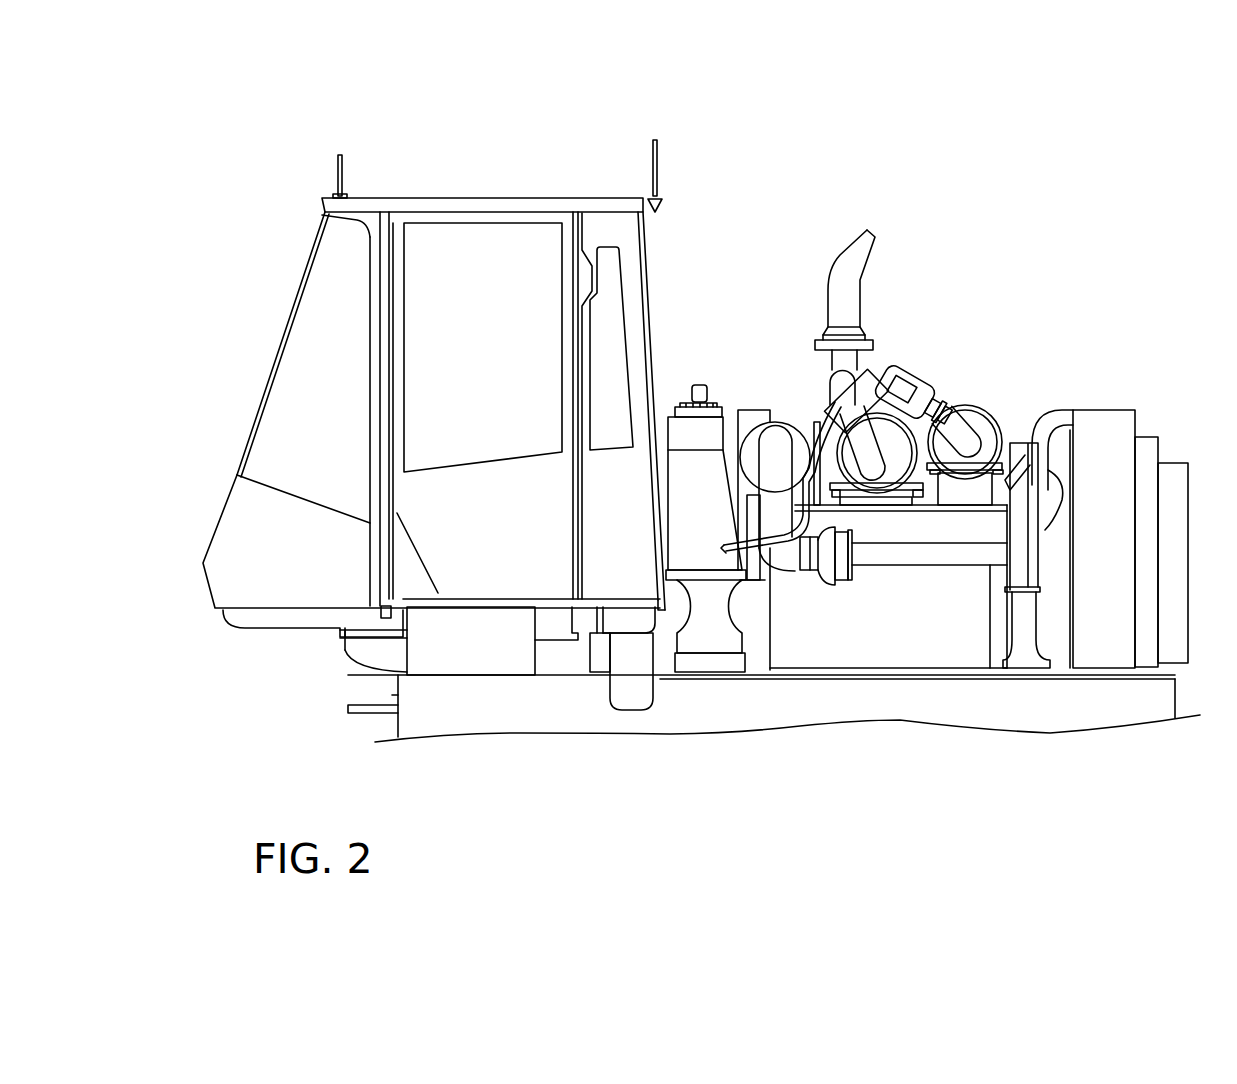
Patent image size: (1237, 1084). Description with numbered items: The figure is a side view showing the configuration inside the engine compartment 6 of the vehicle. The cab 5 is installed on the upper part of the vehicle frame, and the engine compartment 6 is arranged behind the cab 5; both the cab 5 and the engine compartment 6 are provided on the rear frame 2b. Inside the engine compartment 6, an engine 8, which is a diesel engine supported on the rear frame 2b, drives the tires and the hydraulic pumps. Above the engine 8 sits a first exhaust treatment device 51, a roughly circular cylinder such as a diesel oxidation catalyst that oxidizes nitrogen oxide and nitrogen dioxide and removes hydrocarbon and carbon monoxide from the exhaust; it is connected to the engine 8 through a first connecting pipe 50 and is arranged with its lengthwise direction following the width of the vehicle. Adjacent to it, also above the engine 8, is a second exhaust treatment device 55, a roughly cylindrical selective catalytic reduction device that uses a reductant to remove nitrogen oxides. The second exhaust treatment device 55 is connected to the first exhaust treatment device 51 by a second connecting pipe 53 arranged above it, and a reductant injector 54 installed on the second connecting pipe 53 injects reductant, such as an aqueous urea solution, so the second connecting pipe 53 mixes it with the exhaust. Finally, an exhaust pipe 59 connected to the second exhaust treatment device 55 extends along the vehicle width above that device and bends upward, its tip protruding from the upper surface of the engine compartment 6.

The cab 5 is at (490, 198).
The rear frame 2b is at (508, 703).
The engine compartment 6 is at (1049, 366).
The engine 8 is at (957, 613).
The first connecting pipe 50 is at (1033, 510).
The first exhaust treatment device 51 is at (975, 417).
The second connecting pipe 53 is at (898, 392).
The reductant injector 54 is at (896, 408).
The second exhaust treatment device 55 is at (815, 450).
The exhaust pipe 59 is at (852, 263).